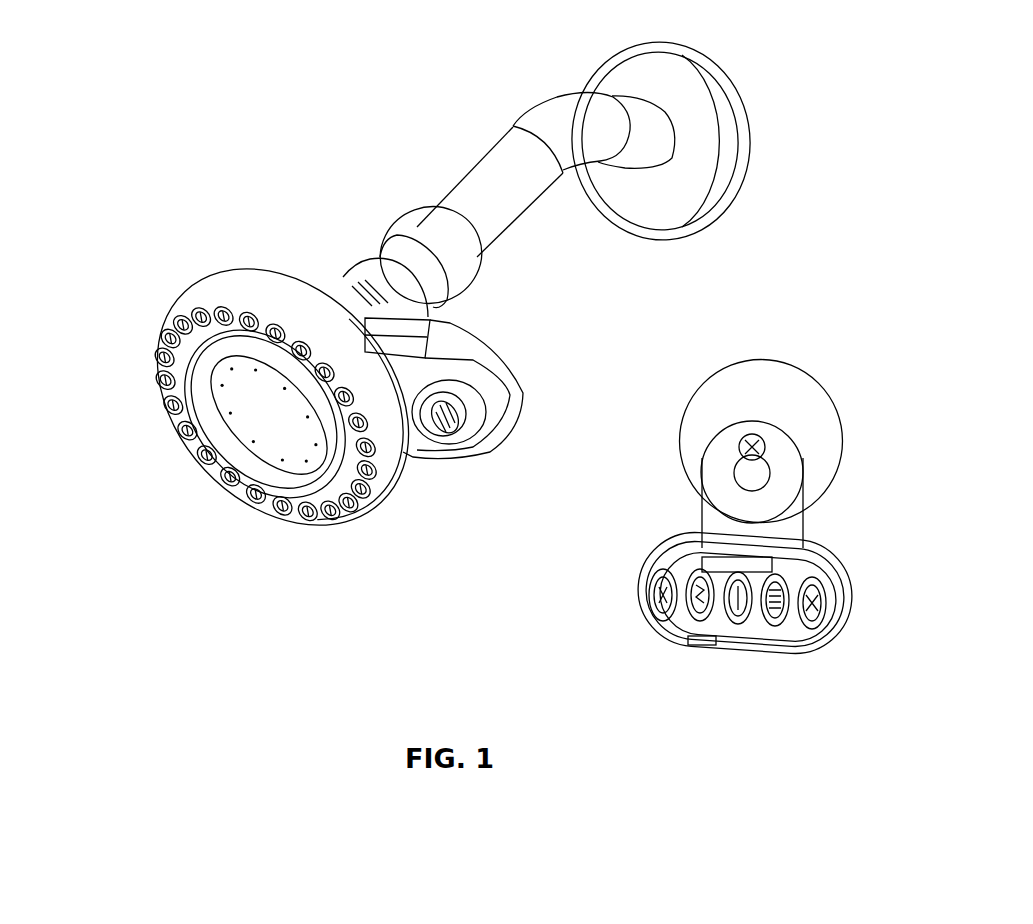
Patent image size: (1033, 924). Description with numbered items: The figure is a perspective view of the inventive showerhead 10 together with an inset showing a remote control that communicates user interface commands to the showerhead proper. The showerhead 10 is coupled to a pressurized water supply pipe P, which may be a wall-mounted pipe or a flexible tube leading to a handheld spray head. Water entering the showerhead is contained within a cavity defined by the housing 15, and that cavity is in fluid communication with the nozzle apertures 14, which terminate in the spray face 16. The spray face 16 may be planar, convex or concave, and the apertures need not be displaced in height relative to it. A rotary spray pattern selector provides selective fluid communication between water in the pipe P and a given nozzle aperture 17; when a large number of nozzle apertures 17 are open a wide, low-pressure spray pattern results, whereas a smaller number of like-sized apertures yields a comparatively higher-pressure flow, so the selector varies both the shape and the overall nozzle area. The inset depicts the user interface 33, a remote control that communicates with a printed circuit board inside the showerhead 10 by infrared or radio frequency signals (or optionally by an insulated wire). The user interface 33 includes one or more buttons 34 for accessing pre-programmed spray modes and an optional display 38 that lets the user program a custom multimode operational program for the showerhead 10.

The showerhead 10 is at (292, 175).
The housing 15 is at (267, 280).
The nozzle apertures 17 is at (157, 367).
The nozzle apertures 14 is at (237, 425).
The spray face 16 is at (268, 427).
The user interface 33 is at (650, 598).
The display 38 is at (688, 616).
The buttons 34 is at (800, 640).
The water supply pipe P is at (496, 198).